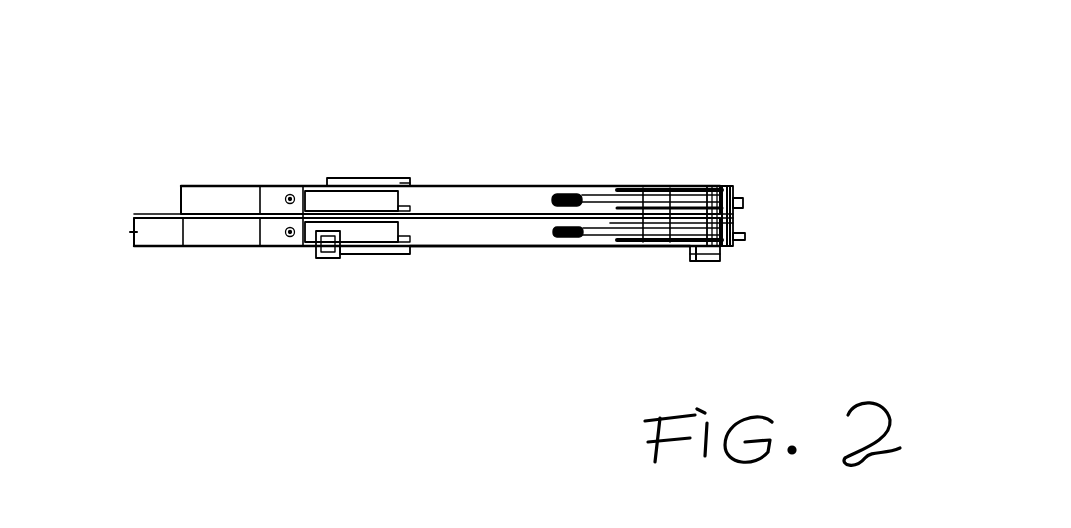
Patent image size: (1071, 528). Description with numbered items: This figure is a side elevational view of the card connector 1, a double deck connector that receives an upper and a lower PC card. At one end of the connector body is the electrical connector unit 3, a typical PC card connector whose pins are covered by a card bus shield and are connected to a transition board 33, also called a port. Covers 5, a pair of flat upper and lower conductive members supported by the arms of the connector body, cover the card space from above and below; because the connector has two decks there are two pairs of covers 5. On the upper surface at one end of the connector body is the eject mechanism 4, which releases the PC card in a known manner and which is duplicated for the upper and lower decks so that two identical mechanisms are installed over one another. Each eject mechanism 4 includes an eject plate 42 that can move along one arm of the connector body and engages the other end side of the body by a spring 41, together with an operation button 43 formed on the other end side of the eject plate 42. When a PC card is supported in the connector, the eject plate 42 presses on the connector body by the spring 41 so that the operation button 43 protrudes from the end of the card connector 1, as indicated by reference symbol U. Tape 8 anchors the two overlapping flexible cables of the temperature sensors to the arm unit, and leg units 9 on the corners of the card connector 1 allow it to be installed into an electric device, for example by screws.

The card connector 1 is at (848, 145).
The electrical connector unit 3 is at (698, 186).
The eject mechanism 4 is at (513, 230).
The covers 5 is at (445, 186).
The tape 8 is at (543, 247).
The leg units 9 is at (324, 258).
The transition board 33 is at (745, 237).
The spring 41 is at (670, 188).
The eject plate 42 is at (496, 212).
The operation button 43 is at (209, 231).
The protruding state of the operation button U is at (135, 230).